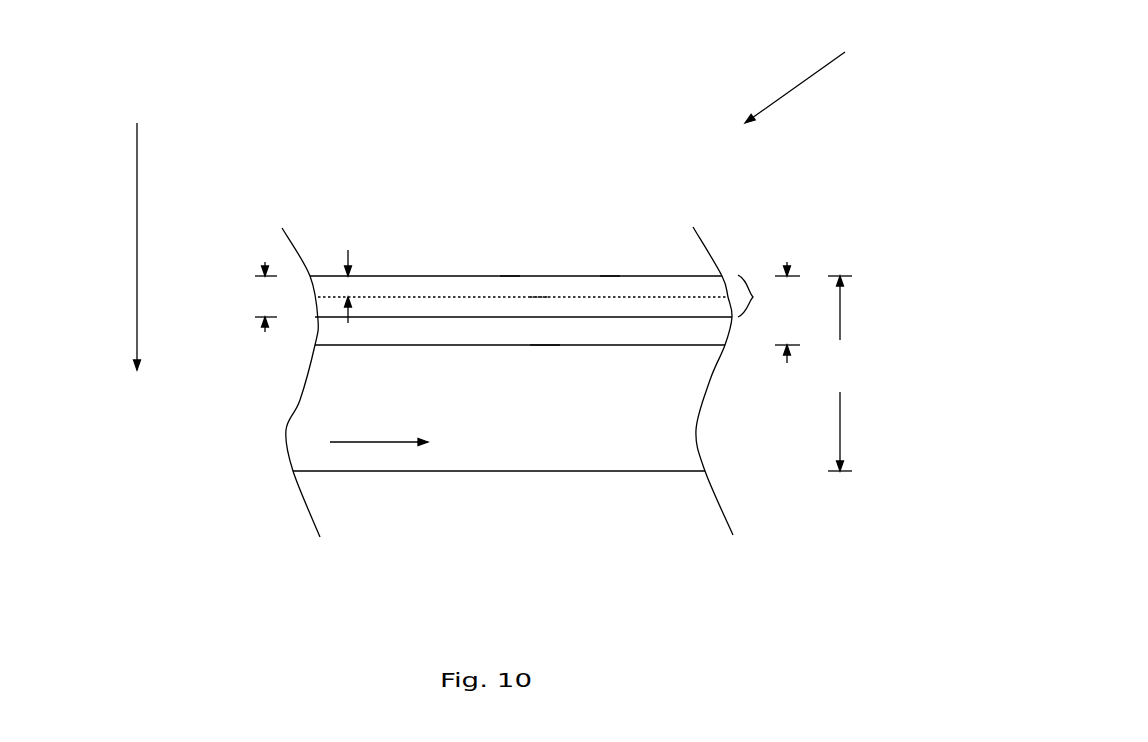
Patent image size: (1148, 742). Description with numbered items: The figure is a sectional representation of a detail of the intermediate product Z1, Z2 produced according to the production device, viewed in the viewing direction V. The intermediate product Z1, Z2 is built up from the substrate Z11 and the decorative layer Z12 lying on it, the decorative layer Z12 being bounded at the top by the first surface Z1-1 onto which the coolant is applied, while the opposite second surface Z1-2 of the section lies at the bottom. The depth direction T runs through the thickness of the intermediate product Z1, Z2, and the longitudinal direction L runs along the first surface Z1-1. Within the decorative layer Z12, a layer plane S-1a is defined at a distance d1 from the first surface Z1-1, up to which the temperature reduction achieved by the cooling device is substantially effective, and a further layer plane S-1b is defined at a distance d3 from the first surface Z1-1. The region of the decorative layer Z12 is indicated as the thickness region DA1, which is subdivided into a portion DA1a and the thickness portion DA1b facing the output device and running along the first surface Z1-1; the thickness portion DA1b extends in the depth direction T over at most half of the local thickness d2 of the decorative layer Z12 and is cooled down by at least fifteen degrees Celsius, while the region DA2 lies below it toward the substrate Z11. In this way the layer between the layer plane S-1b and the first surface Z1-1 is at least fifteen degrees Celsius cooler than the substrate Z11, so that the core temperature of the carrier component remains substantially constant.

The intermediate product Z1 is at (328, 163).
The intermediate product Z2 is at (328, 163).
The first surface Z1-1 is at (402, 275).
The second surface of zone Z1 Z1-2 is at (358, 474).
The substrate Z11 is at (540, 448).
The decorative layer Z12 is at (513, 290).
The layer plane S-1a is at (415, 317).
The layer plane S-1b is at (435, 296).
The first doped area DA1 is at (753, 292).
The first part of doped area DA1 DA1a is at (538, 302).
The thickness portion DA1b is at (608, 288).
The second doped area DA2 is at (548, 332).
The distance d1 is at (599, 357).
The local thickness d2 is at (788, 312).
The distance d3 is at (264, 297).
The depth direction T is at (137, 234).
The longitudinal direction L is at (379, 432).
The viewing direction V is at (804, 82).